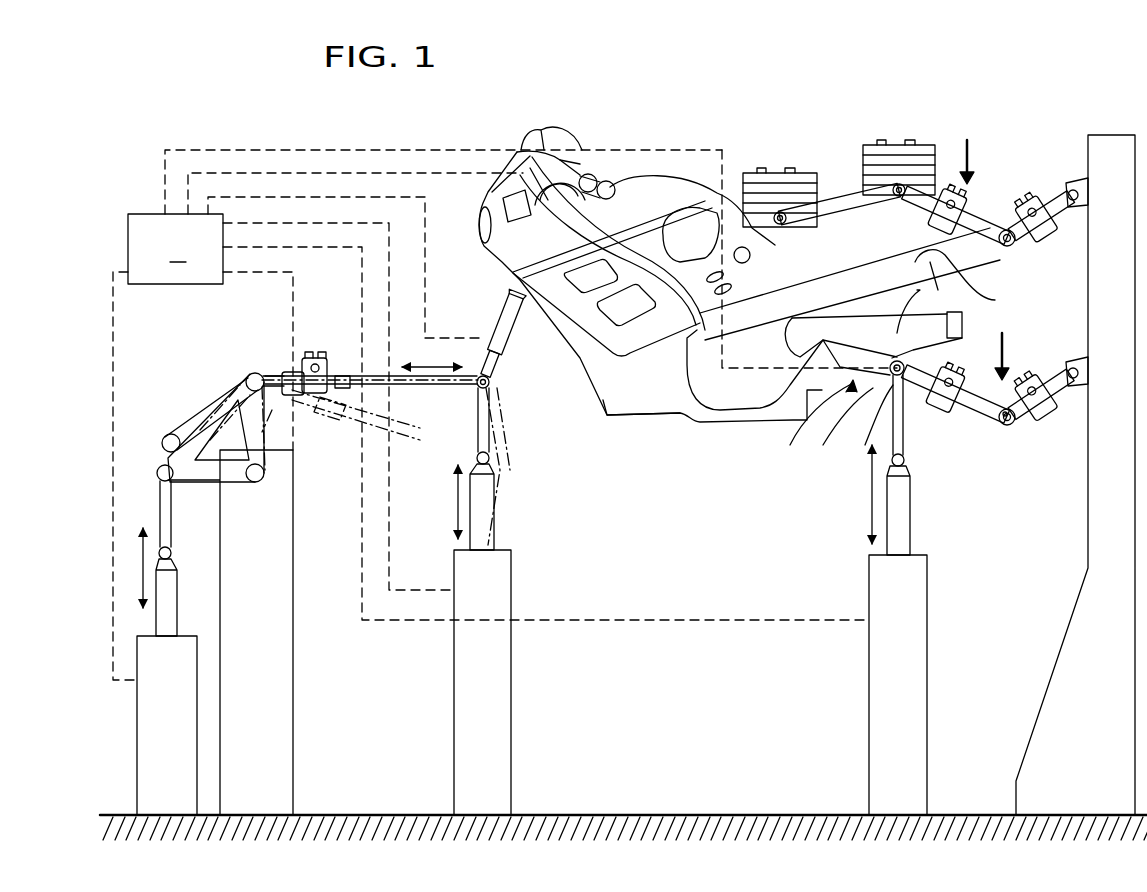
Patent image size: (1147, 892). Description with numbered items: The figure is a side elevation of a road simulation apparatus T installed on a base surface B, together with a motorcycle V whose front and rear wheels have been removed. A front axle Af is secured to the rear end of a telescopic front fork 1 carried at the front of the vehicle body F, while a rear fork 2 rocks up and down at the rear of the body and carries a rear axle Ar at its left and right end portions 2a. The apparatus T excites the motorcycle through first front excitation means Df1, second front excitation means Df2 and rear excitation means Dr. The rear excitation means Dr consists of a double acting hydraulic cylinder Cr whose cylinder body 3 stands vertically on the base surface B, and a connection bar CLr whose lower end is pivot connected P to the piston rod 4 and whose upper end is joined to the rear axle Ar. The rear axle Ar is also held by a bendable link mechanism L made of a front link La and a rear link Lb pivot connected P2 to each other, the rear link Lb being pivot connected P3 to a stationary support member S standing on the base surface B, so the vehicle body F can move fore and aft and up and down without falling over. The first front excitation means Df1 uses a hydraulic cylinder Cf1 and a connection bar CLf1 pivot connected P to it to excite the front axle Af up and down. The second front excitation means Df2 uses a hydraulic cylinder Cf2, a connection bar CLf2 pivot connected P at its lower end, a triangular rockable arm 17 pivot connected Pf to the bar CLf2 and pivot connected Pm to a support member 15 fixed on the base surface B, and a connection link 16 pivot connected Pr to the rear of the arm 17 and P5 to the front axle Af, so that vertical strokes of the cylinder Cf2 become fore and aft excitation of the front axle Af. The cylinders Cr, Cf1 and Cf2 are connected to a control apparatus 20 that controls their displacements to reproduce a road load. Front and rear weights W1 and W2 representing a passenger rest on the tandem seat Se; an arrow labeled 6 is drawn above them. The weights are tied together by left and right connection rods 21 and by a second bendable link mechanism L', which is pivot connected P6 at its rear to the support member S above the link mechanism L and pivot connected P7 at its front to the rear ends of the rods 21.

The front fork 1 is at (493, 302).
The rear fork 2 is at (786, 438).
The left and right end portions of rear fork 2a is at (855, 427).
The cylinder body 3 is at (990, 545).
The piston rod 4 is at (906, 530).
The load application direction 6 is at (977, 151).
The support member 15 is at (290, 706).
The connection link 16 is at (353, 377).
The triangular rockable arm 17 is at (244, 383).
The control apparatus 20 is at (491, 415).
The connection rods 21 is at (848, 202).
The road simulation apparatus T is at (652, 146).
The motorcycle V is at (662, 420).
The vehicle body F is at (608, 395).
The stationary support member S is at (1050, 700).
The base surface B is at (820, 815).
The front weight W1 is at (780, 173).
The rear weight W2 is at (900, 146).
The tandem seat Se is at (813, 258).
The pivot connection P7 is at (896, 198).
The pivot connection P6 is at (1071, 188).
The pivot connection P3 is at (1072, 366).
The pivot connection P2 is at (1000, 408).
The pivot connection P5 is at (480, 374).
The pivot connection P is at (175, 553).
The second bendable link mechanism L' is at (992, 200).
The bendable link mechanism L is at (992, 440).
The front link La is at (965, 425).
The rear link Lb is at (1030, 420).
The rear axle Ar is at (942, 330).
The front axle Af is at (491, 385).
The connection bar CLf1 is at (371, 395).
The connection bar CLf2 is at (160, 470).
The connection bar CLr is at (906, 426).
The pivot connection Pf is at (200, 432).
The pivot connection Pr is at (262, 376).
The pivot connection Pm is at (264, 474).
The first front excitation means Df1 is at (517, 507).
The second front excitation means Df2 is at (190, 396).
The rear excitation means Dr is at (928, 511).
The hydraulic cylinder Cf1 is at (520, 600).
The hydraulic cylinder Cf2 is at (188, 628).
The hydraulic cylinder Cr is at (952, 595).